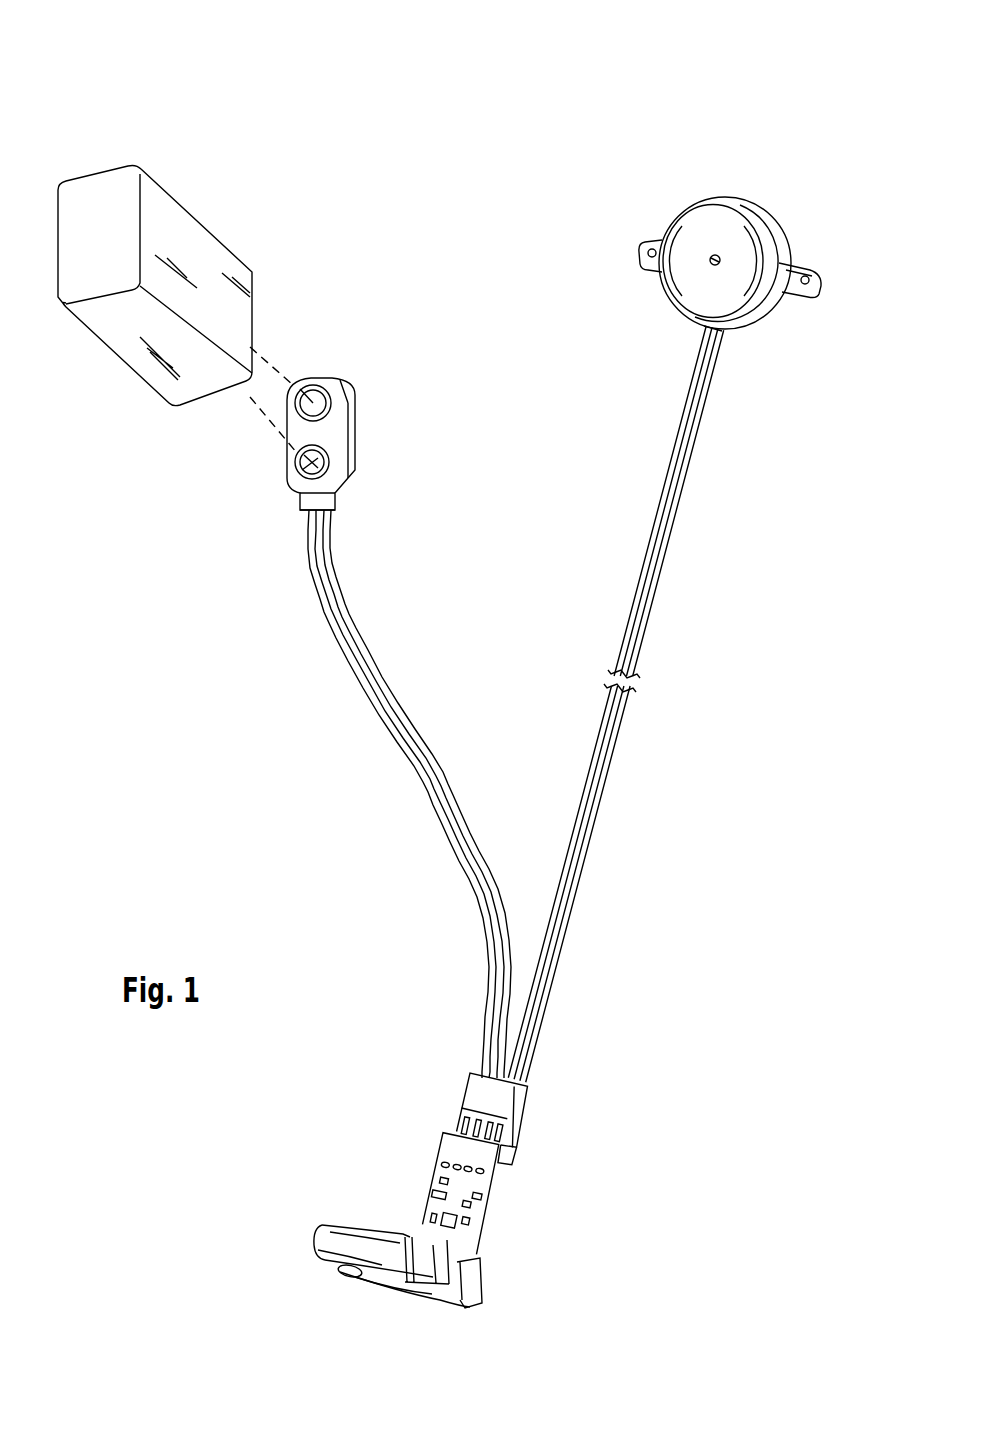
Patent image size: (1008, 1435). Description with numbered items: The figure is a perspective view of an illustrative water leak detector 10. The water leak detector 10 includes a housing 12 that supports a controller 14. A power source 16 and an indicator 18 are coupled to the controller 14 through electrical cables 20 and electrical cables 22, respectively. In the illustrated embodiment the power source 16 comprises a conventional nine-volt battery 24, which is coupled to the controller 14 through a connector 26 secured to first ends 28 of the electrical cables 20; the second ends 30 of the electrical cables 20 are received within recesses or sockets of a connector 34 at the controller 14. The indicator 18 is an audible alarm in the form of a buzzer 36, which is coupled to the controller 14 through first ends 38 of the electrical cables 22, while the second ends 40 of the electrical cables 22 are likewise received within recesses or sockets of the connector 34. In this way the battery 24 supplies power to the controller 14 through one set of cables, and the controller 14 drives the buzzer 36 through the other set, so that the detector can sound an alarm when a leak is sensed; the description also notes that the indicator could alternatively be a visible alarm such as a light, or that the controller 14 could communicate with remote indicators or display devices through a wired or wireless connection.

The water leak detector 10 is at (592, 104).
The housing 12 is at (304, 1263).
The controller 14 is at (500, 1204).
The power source 16 is at (196, 202).
The indicator 18 is at (797, 221).
The electrical cables 20 is at (368, 716).
The electrical cables 22 is at (658, 646).
The battery 24 is at (121, 331).
The connector 26 is at (269, 471).
The first ends 28 is at (343, 521).
The second ends 30 is at (467, 1043).
The connector 34 is at (517, 1110).
The buzzer 36 is at (762, 308).
The first ends 38 is at (686, 341).
The second ends 40 is at (561, 1059).